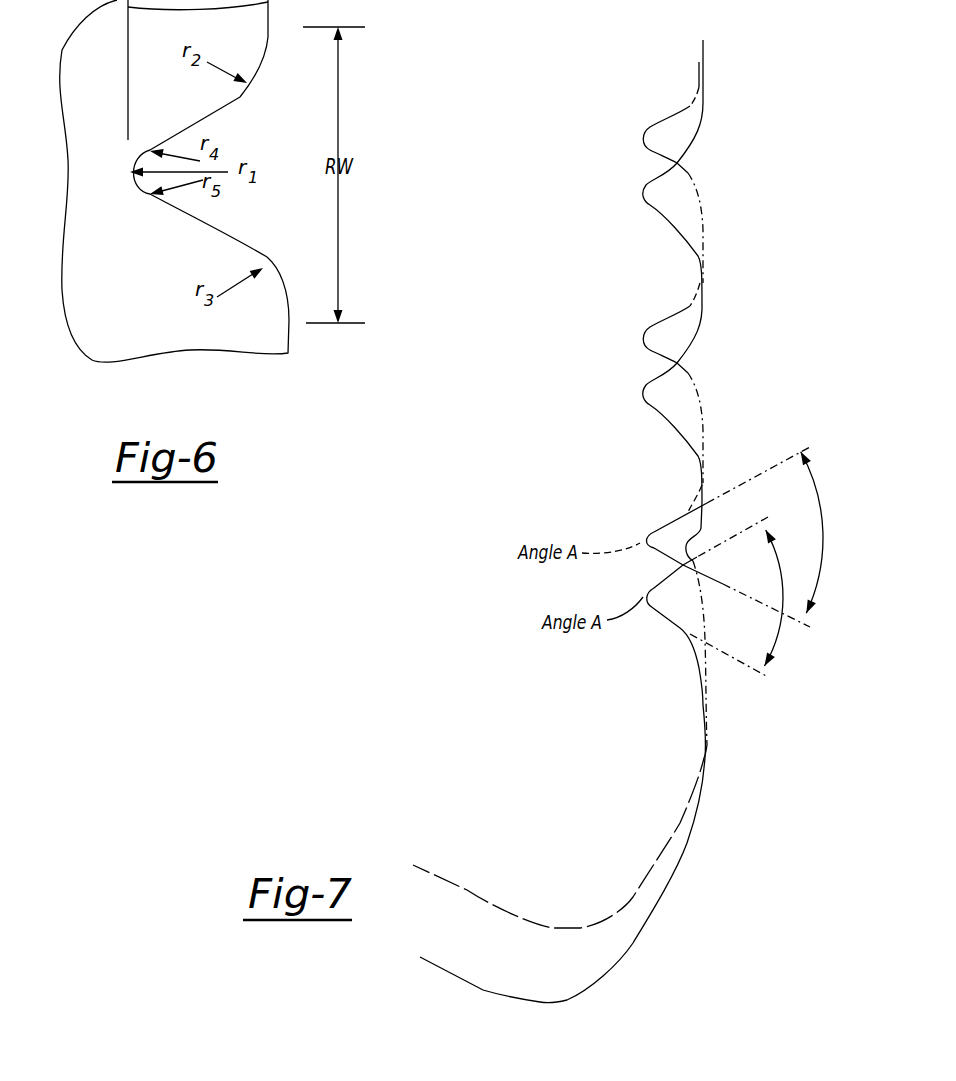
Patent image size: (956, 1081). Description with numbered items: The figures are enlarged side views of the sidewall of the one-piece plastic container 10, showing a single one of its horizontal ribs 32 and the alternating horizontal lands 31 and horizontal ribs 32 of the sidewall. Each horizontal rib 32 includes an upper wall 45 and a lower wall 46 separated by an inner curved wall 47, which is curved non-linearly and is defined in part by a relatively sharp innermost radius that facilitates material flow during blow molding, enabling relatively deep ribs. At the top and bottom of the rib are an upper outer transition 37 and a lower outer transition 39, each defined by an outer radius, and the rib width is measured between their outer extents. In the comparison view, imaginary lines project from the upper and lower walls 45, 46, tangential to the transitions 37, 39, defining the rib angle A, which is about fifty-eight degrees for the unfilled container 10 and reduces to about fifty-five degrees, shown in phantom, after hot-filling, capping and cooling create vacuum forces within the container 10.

In FIG. 7, the one-piece plastic container 10 is at (740, 170).
In FIG. 7, the horizontal lands 31 is at (702, 268).
In FIG. 6, the horizontal ribs 32 is at (368, 132).
In FIG. 7, the horizontal ribs 32 is at (725, 360).
In FIG. 6, the upper outer transition 37 is at (242, 97).
In FIG. 7, the upper outer transition 37 is at (690, 537).
In FIG. 6, the lower outer transition 39 is at (267, 257).
In FIG. 7, the lower outer transition 39 is at (690, 647).
In FIG. 6, the upper wall 45 is at (183, 128).
In FIG. 7, the upper wall 45 is at (668, 515).
In FIG. 6, the lower wall 46 is at (195, 215).
In FIG. 7, the lower wall 46 is at (660, 555).
In FIG. 6, the inner curved wall 47 is at (133, 189).
In FIG. 7, the inner curved wall 47 is at (647, 533).